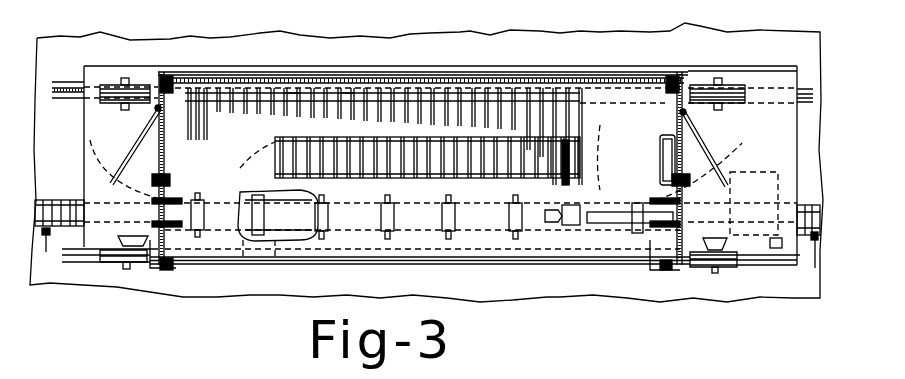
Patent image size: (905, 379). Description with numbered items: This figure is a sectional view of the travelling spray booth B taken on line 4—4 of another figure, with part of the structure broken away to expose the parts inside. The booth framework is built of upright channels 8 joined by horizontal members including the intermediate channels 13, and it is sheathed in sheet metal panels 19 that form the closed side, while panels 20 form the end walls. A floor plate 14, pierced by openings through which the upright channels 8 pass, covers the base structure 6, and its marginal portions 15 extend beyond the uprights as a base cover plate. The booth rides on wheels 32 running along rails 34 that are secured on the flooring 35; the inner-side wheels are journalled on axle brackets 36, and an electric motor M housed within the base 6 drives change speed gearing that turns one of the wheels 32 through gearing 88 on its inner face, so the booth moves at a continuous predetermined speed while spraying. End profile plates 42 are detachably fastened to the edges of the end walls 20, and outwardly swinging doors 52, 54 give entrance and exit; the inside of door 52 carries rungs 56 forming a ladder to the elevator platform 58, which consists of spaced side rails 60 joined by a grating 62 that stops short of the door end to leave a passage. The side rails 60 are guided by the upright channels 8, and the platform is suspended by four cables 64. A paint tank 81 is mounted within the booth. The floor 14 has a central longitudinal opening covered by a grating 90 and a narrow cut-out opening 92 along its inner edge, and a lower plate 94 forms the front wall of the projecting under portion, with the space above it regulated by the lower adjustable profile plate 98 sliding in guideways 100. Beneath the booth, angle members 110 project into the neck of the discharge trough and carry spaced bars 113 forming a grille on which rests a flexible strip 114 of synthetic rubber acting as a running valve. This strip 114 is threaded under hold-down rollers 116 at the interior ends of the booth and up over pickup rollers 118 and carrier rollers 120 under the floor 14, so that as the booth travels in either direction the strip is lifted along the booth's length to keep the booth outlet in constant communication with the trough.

The section line 4 is at (427, 258).
The base structure 6 is at (747, 88).
The upright channels 8 is at (166, 107).
The intermediate channels 13 is at (418, 76).
The floor plate 14 is at (228, 158).
The marginal portions of the floor plate 15 is at (92, 145).
The panels 19 is at (333, 80).
The end wall panels 20 is at (155, 193).
The wheels 32 is at (117, 100).
The rails 34 is at (67, 84).
The flooring 35 is at (417, 50).
The axle brackets 36 is at (131, 235).
The end profile plates 42 is at (154, 262).
The door 52 is at (711, 170).
The door 54 is at (166, 162).
The rungs 56 is at (662, 155).
The elevator platform 58 is at (231, 112).
The side rails 60 is at (626, 96).
The grille or grating 62 is at (347, 110).
The cables 64 is at (170, 82).
The paint tank 81 is at (766, 250).
The gearing 88 is at (735, 233).
The grid or grating 90 is at (360, 137).
The narrow opening 92 is at (468, 250).
The panel 94 is at (607, 245).
The lower adjustable profile plate 98 is at (245, 265).
The guideways 100 is at (173, 270).
The angle members 110 is at (45, 198).
The spaced bars 113 is at (62, 237).
The flexible strip or belting 114 is at (78, 214).
The hold-down rollers 116 is at (201, 217).
The pickup rollers 118 is at (267, 215).
The carrier rollers 120 is at (386, 223).
The booth B is at (575, 67).
The electric motor M is at (786, 160).